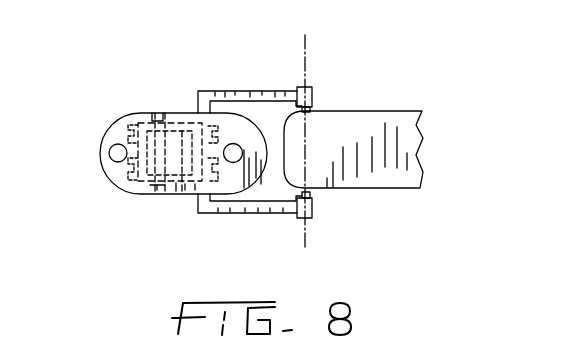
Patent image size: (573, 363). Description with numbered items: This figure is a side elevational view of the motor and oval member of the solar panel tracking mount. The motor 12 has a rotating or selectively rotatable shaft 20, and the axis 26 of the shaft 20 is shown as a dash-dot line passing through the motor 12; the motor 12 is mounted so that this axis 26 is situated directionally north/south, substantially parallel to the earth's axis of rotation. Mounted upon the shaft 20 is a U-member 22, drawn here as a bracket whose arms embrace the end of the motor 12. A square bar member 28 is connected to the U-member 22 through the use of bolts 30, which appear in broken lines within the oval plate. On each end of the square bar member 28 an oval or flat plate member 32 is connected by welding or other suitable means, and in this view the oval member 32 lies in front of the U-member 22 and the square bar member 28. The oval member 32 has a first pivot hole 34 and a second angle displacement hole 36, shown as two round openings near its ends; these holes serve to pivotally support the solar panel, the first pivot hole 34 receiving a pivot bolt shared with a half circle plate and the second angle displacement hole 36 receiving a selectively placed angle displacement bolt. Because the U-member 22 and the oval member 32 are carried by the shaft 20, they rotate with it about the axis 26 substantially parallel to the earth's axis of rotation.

The motor 12 is at (364, 138).
The shaft 20 is at (316, 108).
The U-member 22 is at (247, 214).
The axis 26 is at (305, 50).
The square bar member 28 is at (155, 184).
The bolts 30 is at (127, 123).
The oval member 32 is at (101, 160).
The first pivot hole 34 is at (110, 147).
The second angle displacement hole 36 is at (238, 143).